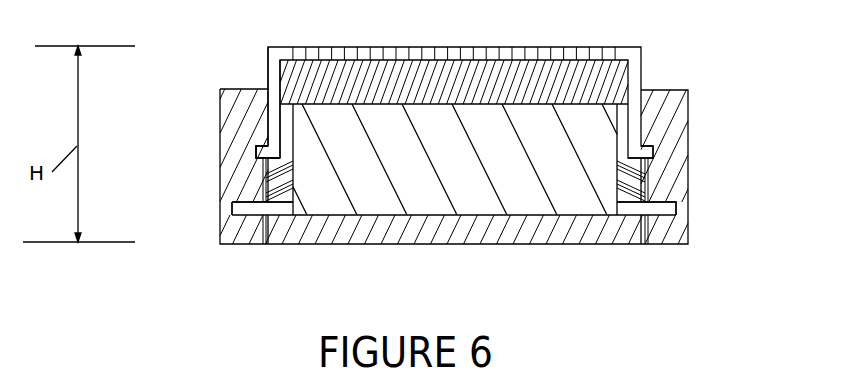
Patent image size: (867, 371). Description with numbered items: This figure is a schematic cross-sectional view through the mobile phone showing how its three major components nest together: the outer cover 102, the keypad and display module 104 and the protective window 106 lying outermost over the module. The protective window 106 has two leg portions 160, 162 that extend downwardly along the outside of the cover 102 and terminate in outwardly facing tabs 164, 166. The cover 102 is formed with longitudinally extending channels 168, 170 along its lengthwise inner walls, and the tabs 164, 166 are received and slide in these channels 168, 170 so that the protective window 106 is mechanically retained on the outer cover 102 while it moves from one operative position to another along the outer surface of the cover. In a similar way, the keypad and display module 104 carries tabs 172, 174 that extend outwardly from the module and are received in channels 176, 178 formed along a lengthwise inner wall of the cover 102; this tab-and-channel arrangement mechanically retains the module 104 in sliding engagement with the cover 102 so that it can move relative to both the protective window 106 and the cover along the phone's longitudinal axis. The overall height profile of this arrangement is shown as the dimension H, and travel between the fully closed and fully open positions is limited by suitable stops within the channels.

The outer cover 102 is at (668, 112).
The keypad and display module 104 is at (520, 202).
The protective window 106 is at (585, 47).
The leg portion 160 is at (647, 60).
The leg portion 162 is at (262, 74).
The outwardly facing tab 164 is at (646, 152).
The outwardly facing tab 166 is at (248, 152).
The longitudinally extending channel 168 is at (653, 139).
The longitudinally extending channel 170 is at (263, 145).
The tab 172 is at (665, 208).
The tab 174 is at (224, 207).
The channel 176 is at (673, 194).
The channel 178 is at (257, 208).